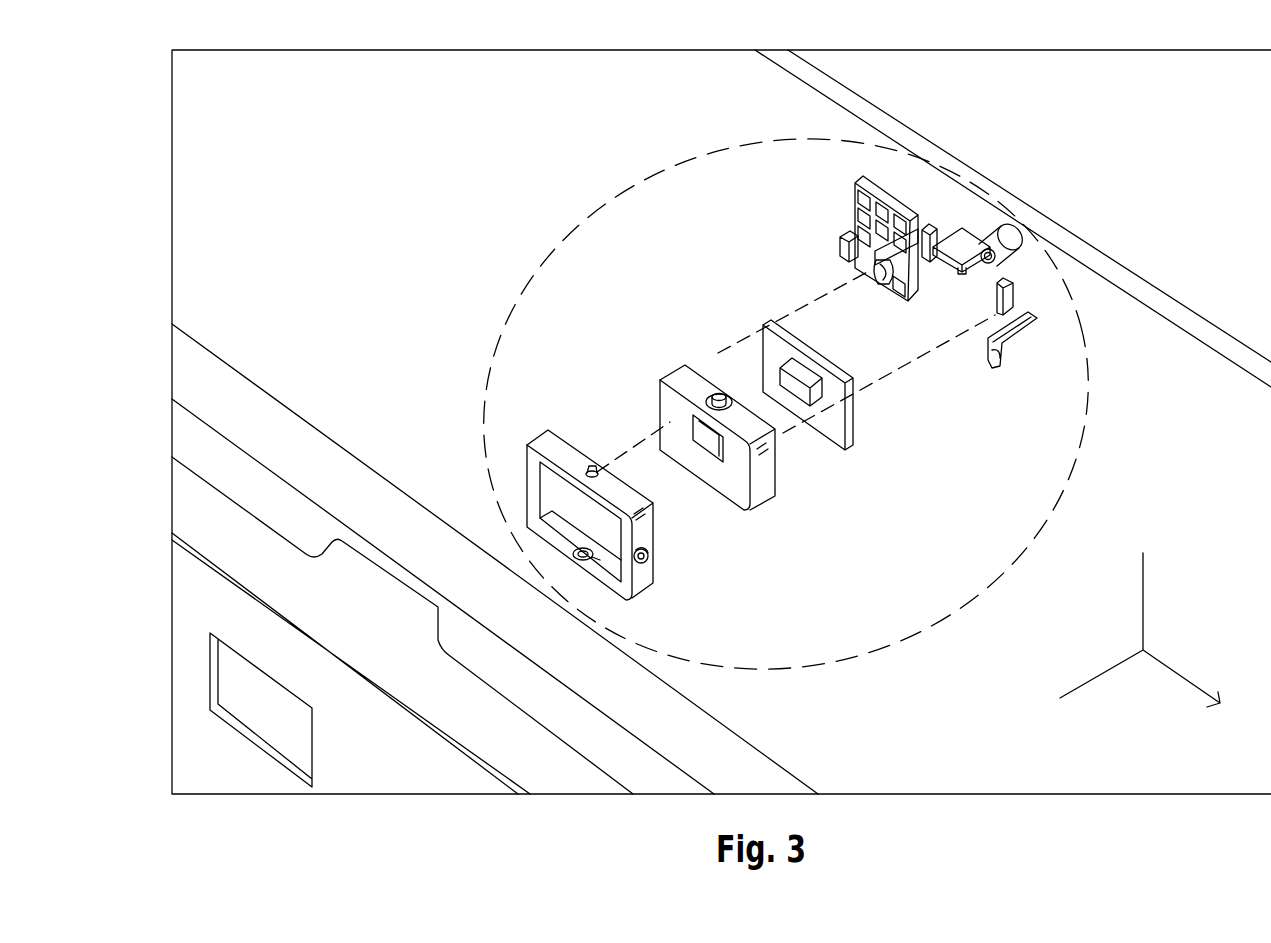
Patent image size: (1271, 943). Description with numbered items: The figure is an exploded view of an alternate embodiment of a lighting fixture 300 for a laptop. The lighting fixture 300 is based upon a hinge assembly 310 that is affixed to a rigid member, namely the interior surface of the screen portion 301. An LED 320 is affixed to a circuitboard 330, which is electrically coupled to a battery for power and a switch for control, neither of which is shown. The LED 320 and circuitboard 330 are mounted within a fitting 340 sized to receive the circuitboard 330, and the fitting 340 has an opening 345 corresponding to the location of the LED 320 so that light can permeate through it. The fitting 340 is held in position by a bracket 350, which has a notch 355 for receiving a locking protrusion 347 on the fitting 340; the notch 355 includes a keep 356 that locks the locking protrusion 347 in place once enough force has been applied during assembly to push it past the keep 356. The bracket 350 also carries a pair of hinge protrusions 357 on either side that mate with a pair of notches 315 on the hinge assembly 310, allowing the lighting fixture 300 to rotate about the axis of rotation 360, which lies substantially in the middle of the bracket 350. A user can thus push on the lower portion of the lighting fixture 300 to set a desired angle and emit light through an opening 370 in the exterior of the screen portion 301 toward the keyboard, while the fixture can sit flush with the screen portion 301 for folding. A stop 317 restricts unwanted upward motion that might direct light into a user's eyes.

The lighting fixture 300 is at (997, 173).
The screen portion 301 is at (476, 147).
The hinge assembly 310 is at (855, 270).
The notches 315 is at (998, 342).
The stop 317 is at (960, 232).
The LED 320 is at (762, 355).
The circuitboard 330 is at (779, 332).
The fitting 340 is at (743, 507).
The opening 345 is at (717, 455).
The locking protrusion 347 is at (718, 395).
The bracket 350 is at (527, 455).
The notch 355 is at (593, 467).
The keep 356 is at (577, 557).
The hinge protrusions 357 is at (649, 558).
The axis of rotation 360 is at (1137, 629).
The opening 370 is at (281, 717).